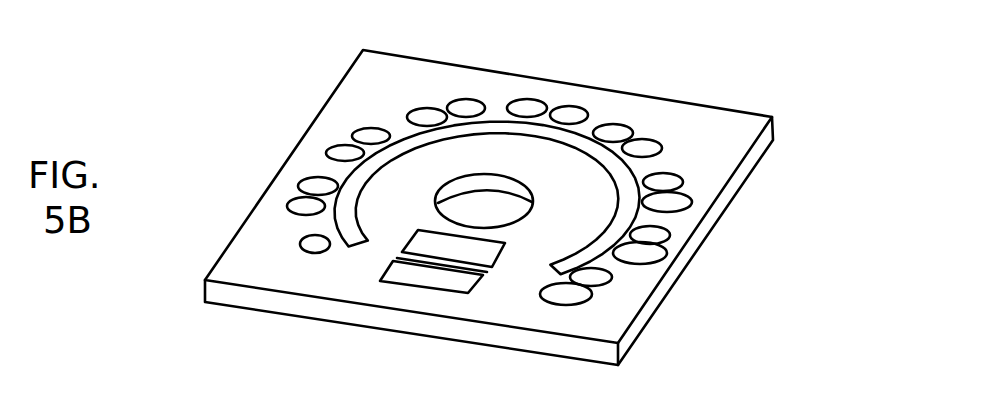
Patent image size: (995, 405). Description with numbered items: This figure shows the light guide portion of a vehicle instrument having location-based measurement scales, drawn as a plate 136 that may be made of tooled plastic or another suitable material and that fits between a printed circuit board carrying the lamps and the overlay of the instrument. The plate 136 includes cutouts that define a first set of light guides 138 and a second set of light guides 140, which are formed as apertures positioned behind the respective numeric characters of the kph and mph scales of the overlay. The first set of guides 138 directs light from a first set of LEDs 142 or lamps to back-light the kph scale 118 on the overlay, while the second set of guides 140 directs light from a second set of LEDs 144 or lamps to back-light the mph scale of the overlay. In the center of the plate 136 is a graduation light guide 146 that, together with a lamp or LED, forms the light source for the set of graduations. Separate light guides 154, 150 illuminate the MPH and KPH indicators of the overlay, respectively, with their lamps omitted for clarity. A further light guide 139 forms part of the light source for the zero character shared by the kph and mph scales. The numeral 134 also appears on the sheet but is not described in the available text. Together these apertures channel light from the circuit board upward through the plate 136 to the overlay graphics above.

The kph scale 118 is at (525, 7).
The housing 134 is at (583, 0).
The plate 136 is at (757, 111).
The first set of light guides 138 is at (466, 108).
The light guide 139 is at (315, 244).
The second set of light guides 140 is at (427, 117).
The first set of LEDs 142 is at (382, 400).
The second set of LEDs 144 is at (560, 396).
The graduation light guide 146 is at (345, 214).
The light guide 150 is at (452, 270).
The light guide 154 is at (410, 244).